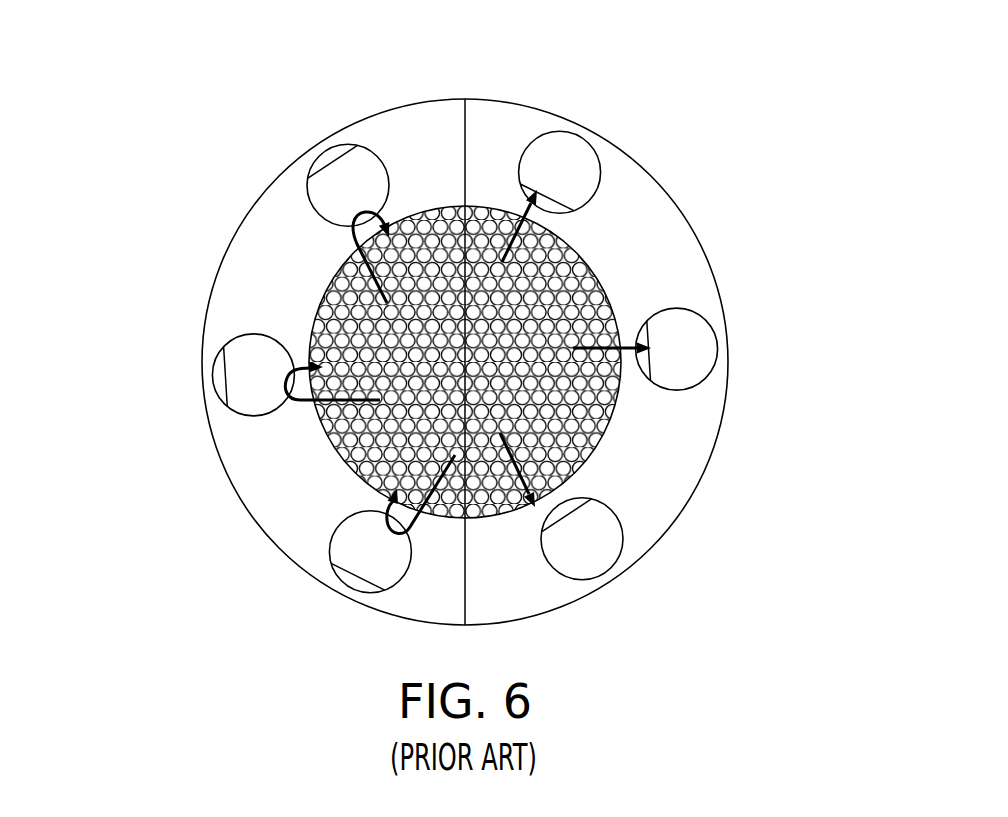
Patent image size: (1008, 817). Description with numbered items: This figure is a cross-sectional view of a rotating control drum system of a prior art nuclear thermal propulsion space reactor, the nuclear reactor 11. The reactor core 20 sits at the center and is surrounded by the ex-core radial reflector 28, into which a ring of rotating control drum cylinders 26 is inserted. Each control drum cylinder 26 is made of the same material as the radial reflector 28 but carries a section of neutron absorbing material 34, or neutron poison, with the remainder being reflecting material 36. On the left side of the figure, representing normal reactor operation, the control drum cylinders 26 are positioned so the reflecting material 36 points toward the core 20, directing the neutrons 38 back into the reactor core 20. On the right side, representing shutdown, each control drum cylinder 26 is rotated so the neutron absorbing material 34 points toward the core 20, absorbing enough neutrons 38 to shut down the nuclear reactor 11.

The nuclear reactor 11 is at (462, 346).
The reactor core 20 is at (333, 313).
The control drum cylinder 26 is at (247, 387).
The radial reflector 28 is at (262, 535).
The neutron absorbing material 34 is at (348, 578).
The reflecting material 36 is at (323, 193).
The neutrons 38 is at (298, 398).